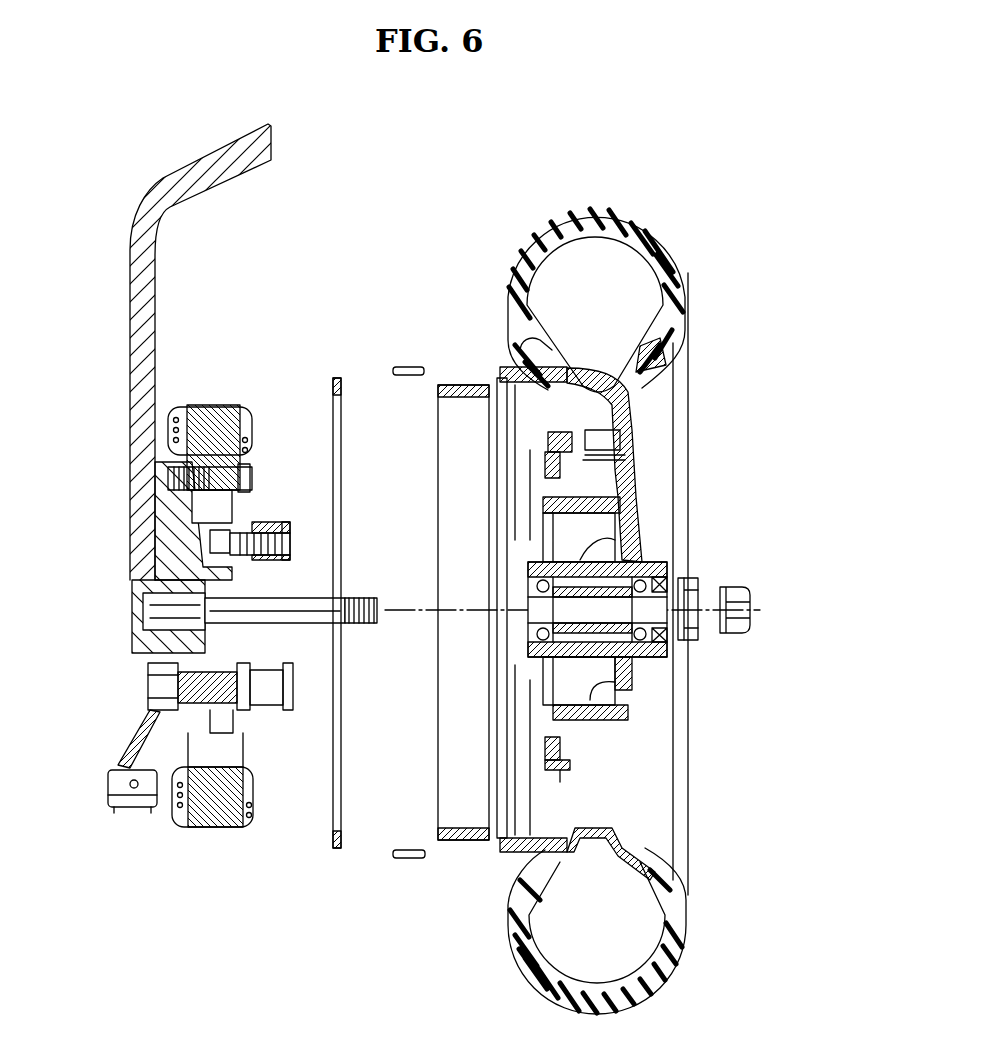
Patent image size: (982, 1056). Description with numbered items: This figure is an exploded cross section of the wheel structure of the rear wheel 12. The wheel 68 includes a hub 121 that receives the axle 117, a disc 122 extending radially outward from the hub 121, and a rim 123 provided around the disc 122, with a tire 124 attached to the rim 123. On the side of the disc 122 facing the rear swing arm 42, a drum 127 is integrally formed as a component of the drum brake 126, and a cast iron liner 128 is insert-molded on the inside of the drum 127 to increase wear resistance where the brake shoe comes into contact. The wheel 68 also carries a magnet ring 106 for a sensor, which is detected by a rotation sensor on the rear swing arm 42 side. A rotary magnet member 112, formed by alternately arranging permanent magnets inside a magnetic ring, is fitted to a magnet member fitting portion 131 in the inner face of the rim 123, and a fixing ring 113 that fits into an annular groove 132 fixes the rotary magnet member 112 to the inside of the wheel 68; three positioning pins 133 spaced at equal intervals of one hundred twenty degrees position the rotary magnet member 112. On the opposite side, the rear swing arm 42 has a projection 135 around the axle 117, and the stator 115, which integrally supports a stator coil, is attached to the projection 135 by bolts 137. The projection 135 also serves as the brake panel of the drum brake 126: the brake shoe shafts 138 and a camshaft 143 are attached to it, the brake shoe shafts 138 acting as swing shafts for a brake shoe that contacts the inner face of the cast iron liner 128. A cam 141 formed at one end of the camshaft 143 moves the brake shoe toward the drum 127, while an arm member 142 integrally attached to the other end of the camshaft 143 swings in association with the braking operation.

The rear wheel 12 is at (688, 217).
The rear swing arm 42 is at (192, 173).
The wheel 68 is at (652, 448).
The magnet ring 106 is at (571, 766).
The rotary magnet member 112 is at (462, 845).
The fixing ring 113 is at (336, 850).
The stator 115 is at (210, 406).
The axle 117 is at (355, 592).
The hub 121 is at (582, 560).
The disc 122 is at (626, 420).
The rim 123 is at (645, 352).
The tire 124 is at (578, 200).
The drum brake 126 is at (353, 280).
The drum 127 is at (582, 722).
The cast iron liner 128 is at (598, 685).
The magnet member fitting portion 131 is at (527, 840).
The annular groove 132 is at (502, 842).
The positioning pins 133 is at (409, 366).
The projection 135 is at (185, 513).
The bolts 137 is at (256, 530).
The brake shoe shafts 138 is at (292, 535).
The cam 141 is at (259, 716).
The arm member 142 is at (133, 745).
The camshaft 143 is at (252, 790).